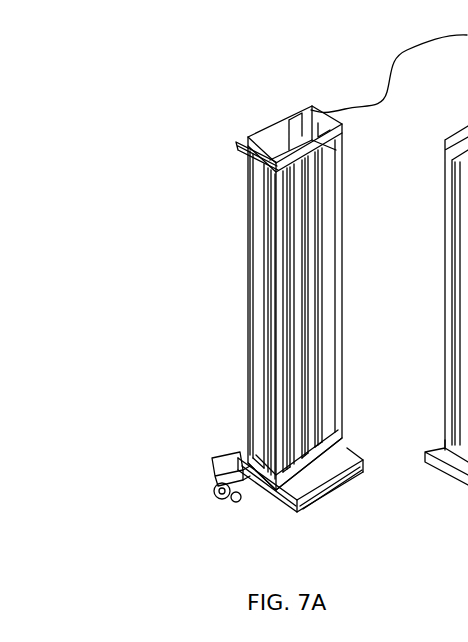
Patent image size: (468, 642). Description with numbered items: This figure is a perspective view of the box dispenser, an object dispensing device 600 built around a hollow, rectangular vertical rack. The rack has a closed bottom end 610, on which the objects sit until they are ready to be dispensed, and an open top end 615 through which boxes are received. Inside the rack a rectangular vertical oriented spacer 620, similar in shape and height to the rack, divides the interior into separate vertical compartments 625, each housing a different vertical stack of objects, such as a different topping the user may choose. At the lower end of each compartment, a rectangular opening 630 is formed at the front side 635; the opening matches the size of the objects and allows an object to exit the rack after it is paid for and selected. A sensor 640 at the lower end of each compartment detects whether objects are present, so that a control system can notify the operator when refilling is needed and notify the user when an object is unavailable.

The object dispensing device 600 is at (82, 68).
The closed bottom end 610 is at (168, 417).
The open top end 615 is at (189, 159).
The vertical oriented spacer 620 is at (279, 131).
The vertical compartment 625 is at (266, 132).
The opening 630 is at (343, 439).
The front side 635 is at (358, 483).
The sensor 640 is at (359, 458).